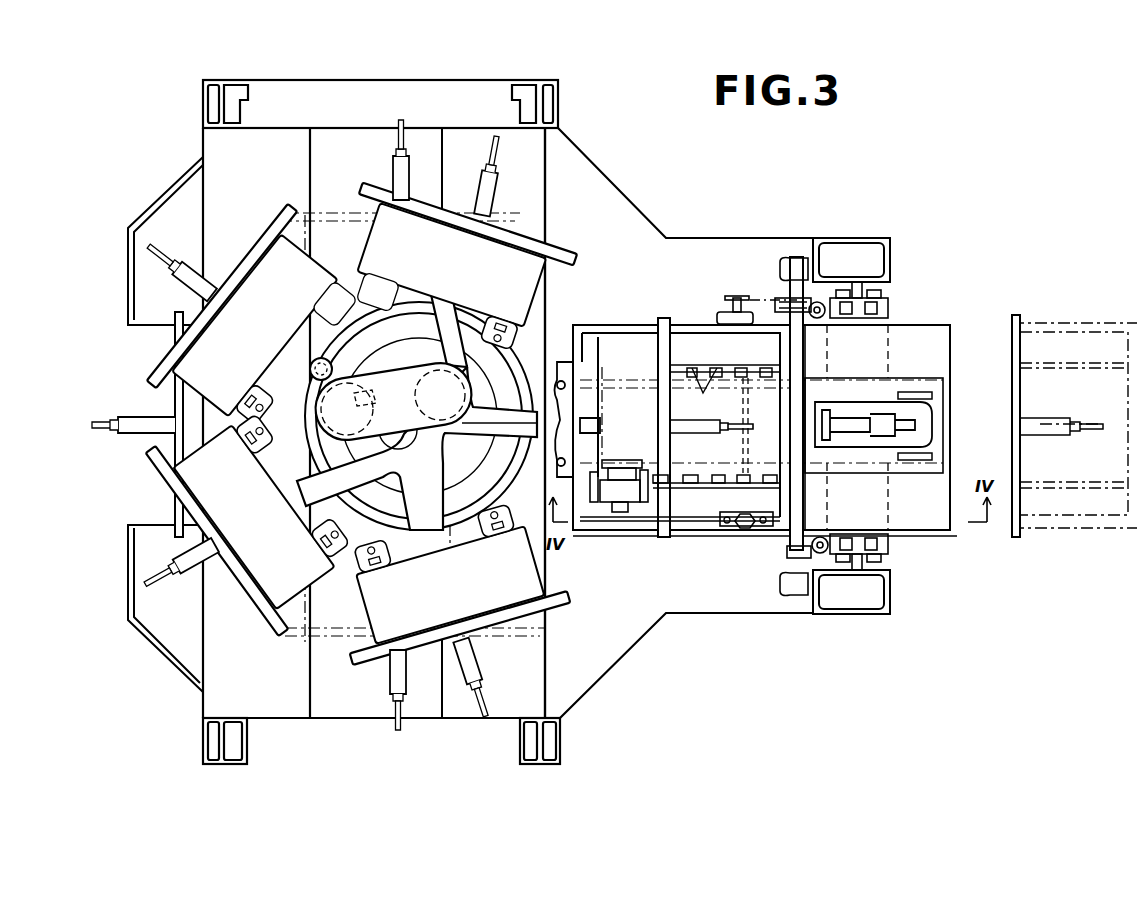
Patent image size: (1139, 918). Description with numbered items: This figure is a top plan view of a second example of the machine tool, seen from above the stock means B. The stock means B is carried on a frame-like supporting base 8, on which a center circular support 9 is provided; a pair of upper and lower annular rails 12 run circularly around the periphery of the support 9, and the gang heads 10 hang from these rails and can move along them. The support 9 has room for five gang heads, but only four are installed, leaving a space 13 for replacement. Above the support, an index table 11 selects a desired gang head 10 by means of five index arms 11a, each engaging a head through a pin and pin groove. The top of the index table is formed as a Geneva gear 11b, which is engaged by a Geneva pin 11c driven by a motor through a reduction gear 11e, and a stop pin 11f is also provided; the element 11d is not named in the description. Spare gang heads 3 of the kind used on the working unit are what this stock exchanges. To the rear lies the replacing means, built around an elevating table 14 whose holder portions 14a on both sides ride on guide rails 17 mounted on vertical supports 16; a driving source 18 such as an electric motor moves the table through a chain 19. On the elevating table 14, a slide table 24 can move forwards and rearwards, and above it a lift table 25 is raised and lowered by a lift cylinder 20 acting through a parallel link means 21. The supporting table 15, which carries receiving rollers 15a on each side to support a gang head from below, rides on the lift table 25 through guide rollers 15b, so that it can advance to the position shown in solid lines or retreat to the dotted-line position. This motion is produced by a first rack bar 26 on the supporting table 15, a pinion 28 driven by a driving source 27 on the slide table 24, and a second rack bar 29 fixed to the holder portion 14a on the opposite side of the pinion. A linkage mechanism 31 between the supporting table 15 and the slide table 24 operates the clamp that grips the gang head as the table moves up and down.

The gang heads 3 is at (337, 212).
The supporting base 8 is at (284, 690).
The center circular support 9 is at (350, 542).
The gang heads 10 is at (253, 270).
The index table 11 is at (352, 290).
The index arms 11a is at (422, 296).
The Geneva gear 11b is at (462, 450).
The Geneva pin 11c is at (410, 377).
The holder block 11d is at (447, 277).
The reduction gear 11e is at (275, 490).
The stop pin 11f is at (305, 360).
The annular rails 12 is at (534, 384).
The space 13 is at (545, 365).
The elevating table 14 is at (945, 300).
The holder portions 14a is at (890, 305).
The supporting table 15 is at (690, 342).
The receiving rollers 15a is at (693, 475).
The guide rollers 15b is at (742, 475).
The vertical supports 16 is at (838, 240).
The guide rails 17 is at (860, 282).
The driving source 18 is at (720, 314).
The chain 19 is at (793, 292).
The lift cylinder 20 is at (852, 420).
The parallel link means 21 is at (932, 397).
The slide table 24 is at (915, 335).
The lift table 25 is at (930, 382).
The first rack bar 26 is at (700, 521).
The driving source 27 is at (725, 530).
The pinion 28 is at (745, 530).
The second rack bar 29 is at (762, 530).
The linkage mechanism 31 is at (620, 515).
The stock means B is at (232, 613).